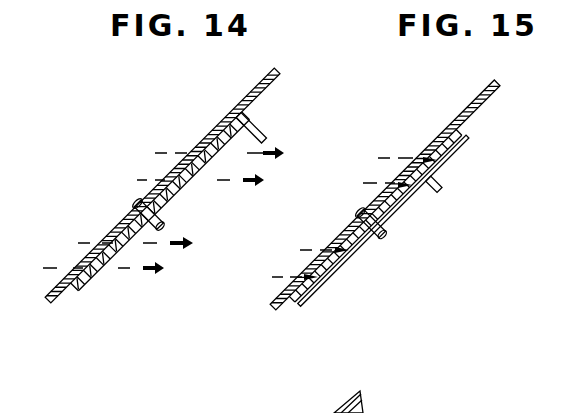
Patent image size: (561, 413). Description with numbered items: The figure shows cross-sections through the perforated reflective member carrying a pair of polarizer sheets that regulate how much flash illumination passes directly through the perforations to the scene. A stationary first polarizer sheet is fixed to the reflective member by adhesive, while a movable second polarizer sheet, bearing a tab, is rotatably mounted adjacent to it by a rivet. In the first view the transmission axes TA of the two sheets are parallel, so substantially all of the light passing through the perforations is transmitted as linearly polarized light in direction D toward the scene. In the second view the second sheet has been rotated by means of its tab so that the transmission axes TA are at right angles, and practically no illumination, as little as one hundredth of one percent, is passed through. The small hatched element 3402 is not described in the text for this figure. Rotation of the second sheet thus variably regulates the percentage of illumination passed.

In FIG. 14, the transmission axes TA is at (160, 188).
In FIG. 15, the transmission axes TA is at (443, 150).
In FIG. 14, the flow direction D is at (243, 155).
In FIG. 15, the triangle marker 3402 is at (363, 405).